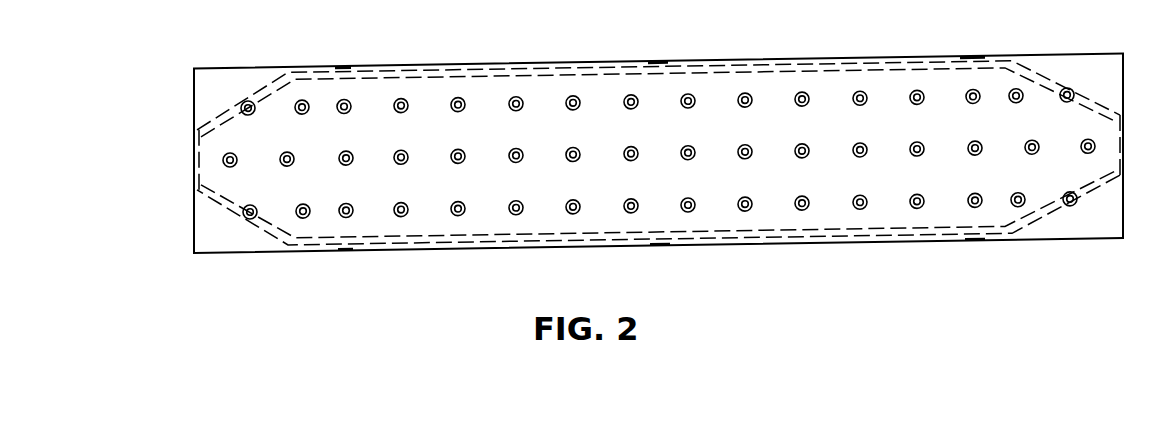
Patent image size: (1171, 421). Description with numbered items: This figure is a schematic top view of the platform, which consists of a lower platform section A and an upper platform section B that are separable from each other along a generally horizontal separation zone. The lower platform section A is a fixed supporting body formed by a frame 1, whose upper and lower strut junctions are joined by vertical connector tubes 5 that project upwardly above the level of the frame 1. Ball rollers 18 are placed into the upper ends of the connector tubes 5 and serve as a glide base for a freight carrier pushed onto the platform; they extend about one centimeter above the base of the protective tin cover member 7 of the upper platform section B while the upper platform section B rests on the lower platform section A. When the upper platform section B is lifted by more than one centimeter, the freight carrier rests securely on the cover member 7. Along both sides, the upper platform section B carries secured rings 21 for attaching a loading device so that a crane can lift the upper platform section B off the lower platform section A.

The frame 1 is at (784, 68).
The vertical connector tubes 5 is at (457, 217).
The protective tin cover member 7 is at (1112, 80).
The ball rollers 18 is at (343, 99).
The rings 21 is at (350, 67).
The lower platform section A is at (527, 75).
The upper platform section B is at (228, 93).